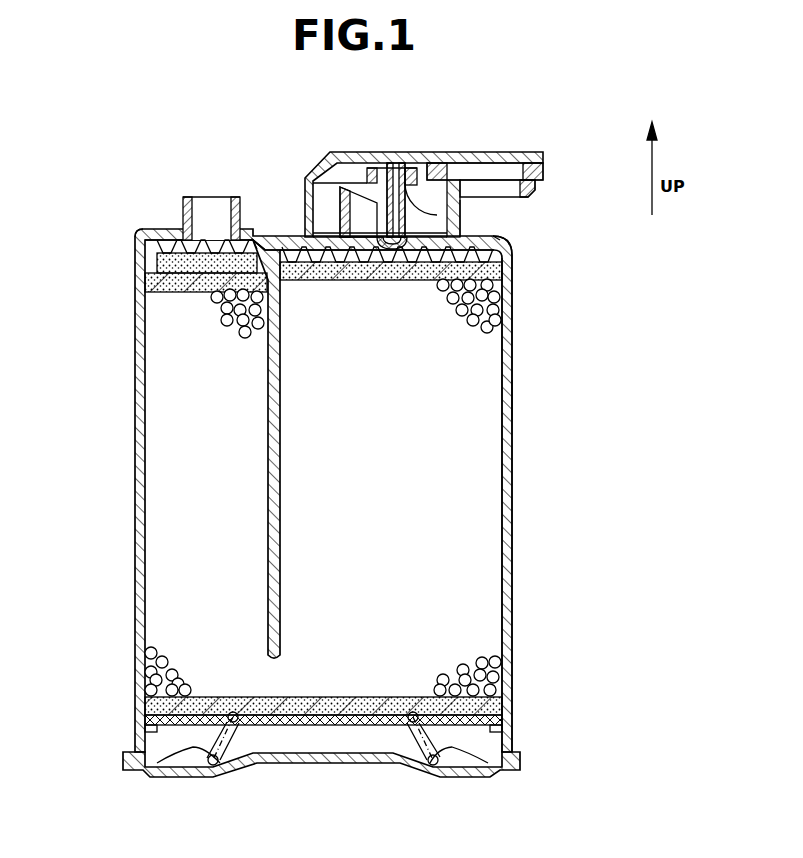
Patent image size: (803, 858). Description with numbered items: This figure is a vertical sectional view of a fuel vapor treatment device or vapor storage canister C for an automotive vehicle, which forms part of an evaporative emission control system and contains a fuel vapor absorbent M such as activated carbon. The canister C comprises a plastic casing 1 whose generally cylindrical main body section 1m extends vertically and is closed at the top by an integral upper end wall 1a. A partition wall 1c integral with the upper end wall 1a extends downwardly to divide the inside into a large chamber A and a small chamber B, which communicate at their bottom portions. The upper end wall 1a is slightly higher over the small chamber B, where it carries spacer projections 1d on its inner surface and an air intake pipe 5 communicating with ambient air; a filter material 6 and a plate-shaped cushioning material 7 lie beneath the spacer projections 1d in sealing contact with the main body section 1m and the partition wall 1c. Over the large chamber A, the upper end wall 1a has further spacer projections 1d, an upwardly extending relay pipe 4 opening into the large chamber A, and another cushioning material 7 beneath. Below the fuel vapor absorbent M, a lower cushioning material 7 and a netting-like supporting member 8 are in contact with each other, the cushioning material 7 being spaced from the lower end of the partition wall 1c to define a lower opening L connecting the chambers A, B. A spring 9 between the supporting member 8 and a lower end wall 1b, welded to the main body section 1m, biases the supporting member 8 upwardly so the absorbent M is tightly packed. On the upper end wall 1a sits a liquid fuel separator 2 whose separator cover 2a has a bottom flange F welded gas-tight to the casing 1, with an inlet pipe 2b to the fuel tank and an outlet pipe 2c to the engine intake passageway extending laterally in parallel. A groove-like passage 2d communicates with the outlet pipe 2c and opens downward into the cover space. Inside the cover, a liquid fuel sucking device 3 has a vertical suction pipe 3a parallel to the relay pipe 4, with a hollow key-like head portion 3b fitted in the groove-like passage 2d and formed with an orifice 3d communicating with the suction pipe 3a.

The casing 1 is at (512, 443).
The upper end wall 1a is at (298, 233).
The lower end wall 1b is at (350, 760).
The partition wall 1c is at (277, 460).
The spacer projections 1d is at (180, 225).
The main body section 1m is at (512, 475).
The liquid fuel separator 2 is at (475, 213).
The separator cover 2a is at (463, 202).
The inlet pipe 2b is at (503, 188).
The outlet pipe 2c is at (488, 157).
The groove-like passage 2d is at (340, 170).
The liquid fuel sucking device 3 is at (416, 166).
The suction pipe 3a is at (413, 213).
The key-like head portion 3b is at (373, 170).
The orifice 3d is at (397, 177).
The relay pipe 4 is at (300, 245).
The air intake pipe 5 is at (193, 212).
The filter material 6 is at (163, 262).
The cushioning material 7 is at (197, 288).
The supporting member 8 is at (373, 723).
The spring 9 is at (235, 733).
The large chamber A is at (463, 547).
The small chamber B is at (163, 493).
The canister C is at (518, 397).
The flange F is at (495, 240).
The lower opening L is at (273, 677).
The fuel vapor absorbent M is at (247, 333).